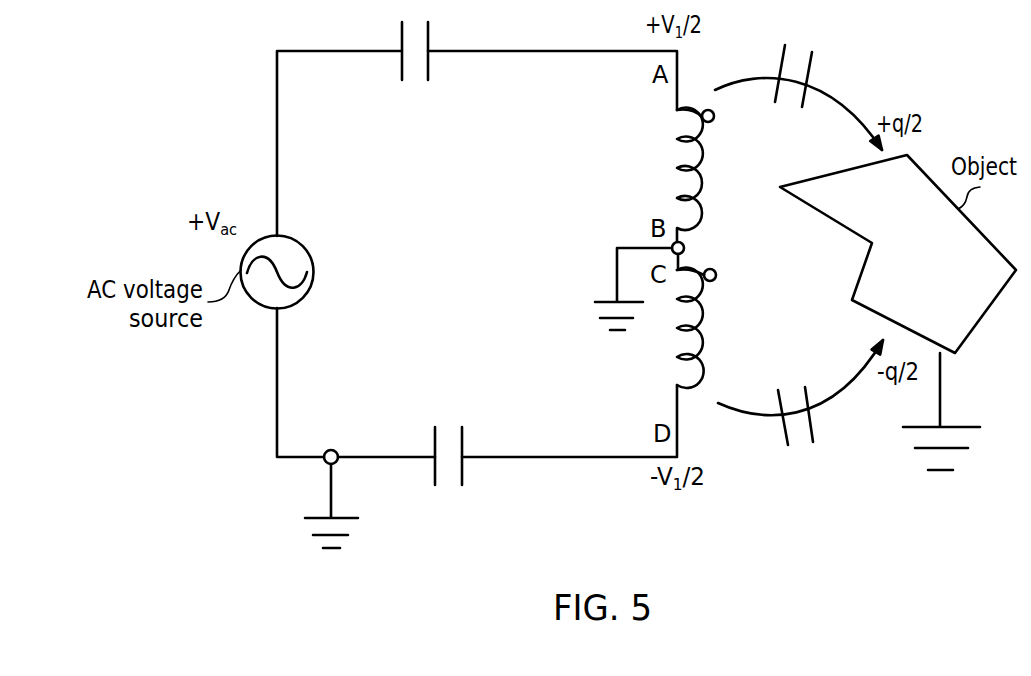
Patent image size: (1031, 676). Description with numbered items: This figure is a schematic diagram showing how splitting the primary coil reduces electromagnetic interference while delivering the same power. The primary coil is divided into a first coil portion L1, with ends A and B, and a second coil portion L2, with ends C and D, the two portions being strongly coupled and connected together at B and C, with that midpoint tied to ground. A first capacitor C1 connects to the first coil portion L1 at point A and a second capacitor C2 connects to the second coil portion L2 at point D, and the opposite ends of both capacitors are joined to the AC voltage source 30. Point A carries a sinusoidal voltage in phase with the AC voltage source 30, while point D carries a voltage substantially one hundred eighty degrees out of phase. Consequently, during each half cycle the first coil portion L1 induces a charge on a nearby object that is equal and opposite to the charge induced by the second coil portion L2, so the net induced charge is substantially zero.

The AC voltage source 30 is at (312, 270).
The first capacitor C1 is at (435, 45).
The second capacitor C2 is at (465, 450).
The first coil portion L1 is at (678, 174).
The second coil portion L2 is at (678, 321).